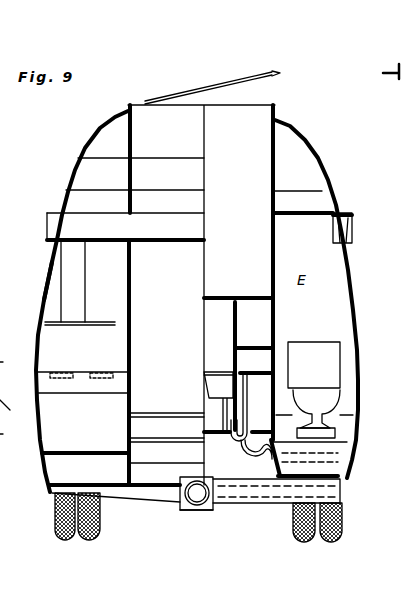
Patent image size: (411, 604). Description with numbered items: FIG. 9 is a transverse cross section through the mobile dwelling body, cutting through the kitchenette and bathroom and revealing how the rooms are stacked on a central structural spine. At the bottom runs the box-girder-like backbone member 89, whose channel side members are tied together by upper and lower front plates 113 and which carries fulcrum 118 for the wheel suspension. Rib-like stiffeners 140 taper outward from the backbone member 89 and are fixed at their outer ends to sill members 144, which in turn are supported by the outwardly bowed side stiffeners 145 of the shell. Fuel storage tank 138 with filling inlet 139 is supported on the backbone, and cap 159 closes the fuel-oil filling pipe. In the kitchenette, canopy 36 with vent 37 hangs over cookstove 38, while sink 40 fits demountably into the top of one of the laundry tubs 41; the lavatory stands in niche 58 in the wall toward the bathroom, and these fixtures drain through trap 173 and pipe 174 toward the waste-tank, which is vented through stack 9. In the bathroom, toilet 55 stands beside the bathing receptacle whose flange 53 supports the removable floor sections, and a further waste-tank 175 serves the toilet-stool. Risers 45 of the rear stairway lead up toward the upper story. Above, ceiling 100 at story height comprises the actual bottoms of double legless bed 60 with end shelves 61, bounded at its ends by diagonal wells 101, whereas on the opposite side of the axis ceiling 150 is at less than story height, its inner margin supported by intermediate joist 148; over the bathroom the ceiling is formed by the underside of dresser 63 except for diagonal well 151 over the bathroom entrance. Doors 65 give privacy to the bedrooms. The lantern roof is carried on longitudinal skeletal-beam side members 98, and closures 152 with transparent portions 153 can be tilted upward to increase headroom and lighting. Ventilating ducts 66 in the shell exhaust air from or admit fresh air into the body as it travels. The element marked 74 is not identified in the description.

The stack 9 is at (348, 307).
The longitudinal skeletal-beam side members 98 is at (127, 113).
The transparent portions 153 is at (236, 74).
The closures 152 is at (278, 72).
The doors 65 is at (201, 272).
The end shelves 61 is at (135, 174).
The diagonal wells 101 is at (125, 204).
The vent 37 is at (46, 213).
The double legless bed 60 is at (180, 241).
The ceiling 100 is at (192, 242).
The side stiffeners 145 is at (45, 270).
The intermediate joist 148 is at (210, 300).
The ceiling 150 is at (203, 312).
The canopy 36 is at (70, 326).
The cookstove 38 is at (83, 401).
The fuel storage tank 138 is at (85, 468).
The risers 45 is at (166, 427).
The backbone member 89 is at (180, 479).
The niche 58 is at (247, 366).
The sink 40 is at (218, 401).
The laundry tubs 41 is at (239, 390).
The trap 173 is at (243, 456).
The dresser 63 is at (293, 216).
The diagonal well 151 is at (313, 183).
The toilet 55 is at (305, 365).
The flange 53 is at (344, 443).
The waste-tank 175 is at (347, 466).
The sill members 144 is at (341, 488).
The pipe 174 is at (265, 483).
The rib-like stiffeners 140 is at (175, 502).
The fulcrum 118 is at (190, 511).
The upper and lower front plates 113 is at (217, 506).
The filling inlet 139 is at (344, 503).
The ventilating ducts 66 is at (9, 365).
The cap 159 is at (17, 413).
The wall 74 is at (9, 437).